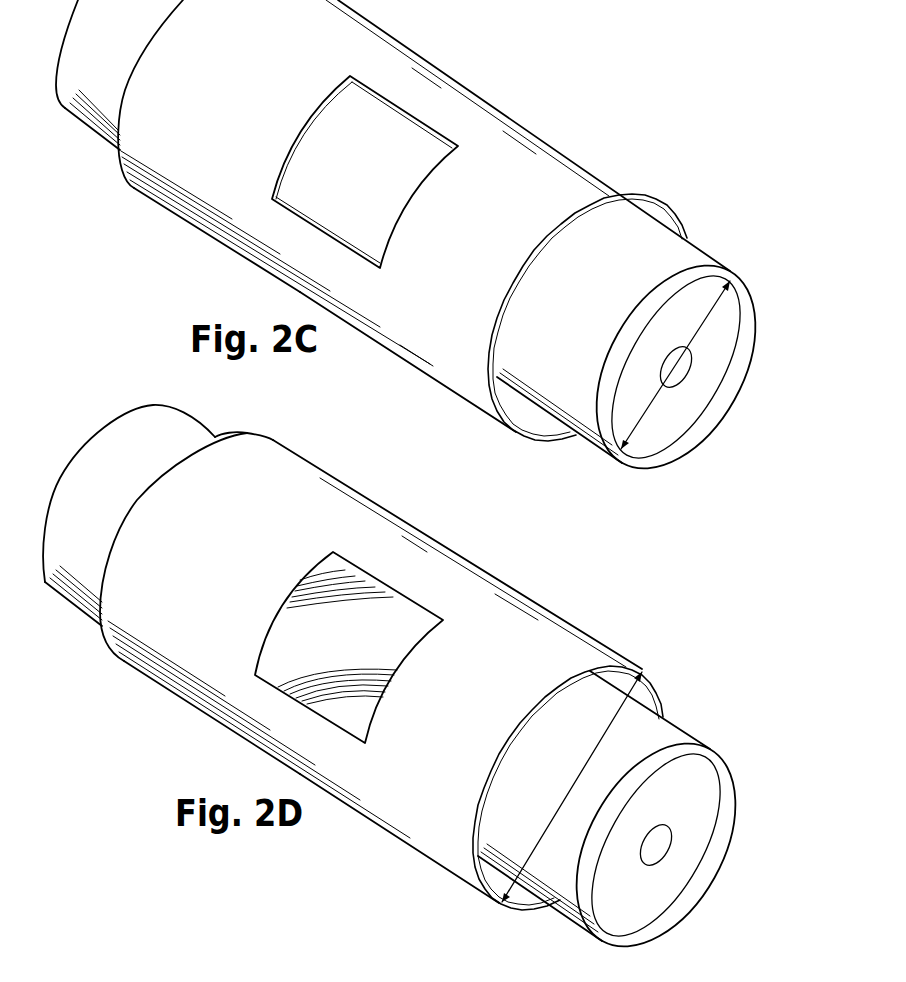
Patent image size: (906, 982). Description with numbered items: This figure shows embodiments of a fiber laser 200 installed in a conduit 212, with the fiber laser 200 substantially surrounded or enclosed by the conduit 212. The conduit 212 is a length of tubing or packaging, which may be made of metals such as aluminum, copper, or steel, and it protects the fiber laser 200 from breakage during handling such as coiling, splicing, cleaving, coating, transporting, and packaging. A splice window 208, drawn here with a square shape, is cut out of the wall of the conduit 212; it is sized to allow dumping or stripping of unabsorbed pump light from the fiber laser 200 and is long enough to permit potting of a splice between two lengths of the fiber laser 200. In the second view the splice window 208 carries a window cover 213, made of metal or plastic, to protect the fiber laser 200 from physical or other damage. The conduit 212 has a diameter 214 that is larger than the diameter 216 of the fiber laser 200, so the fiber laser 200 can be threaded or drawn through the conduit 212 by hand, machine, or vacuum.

In FIG. 2C, the fiber laser 200 is at (719, 249).
In FIG. 2D, the fiber laser 200 is at (703, 731).
In FIG. 2C, the splice window 208 is at (400, 212).
In FIG. 2D, the splice window 208 is at (403, 656).
In FIG. 2C, the conduit 212 is at (482, 68).
In FIG. 2D, the conduit 212 is at (466, 543).
In FIG. 2D, the window cover 213 is at (355, 652).
In FIG. 2D, the diameter 214 is at (572, 786).
In FIG. 2C, the diameter 216 is at (638, 440).